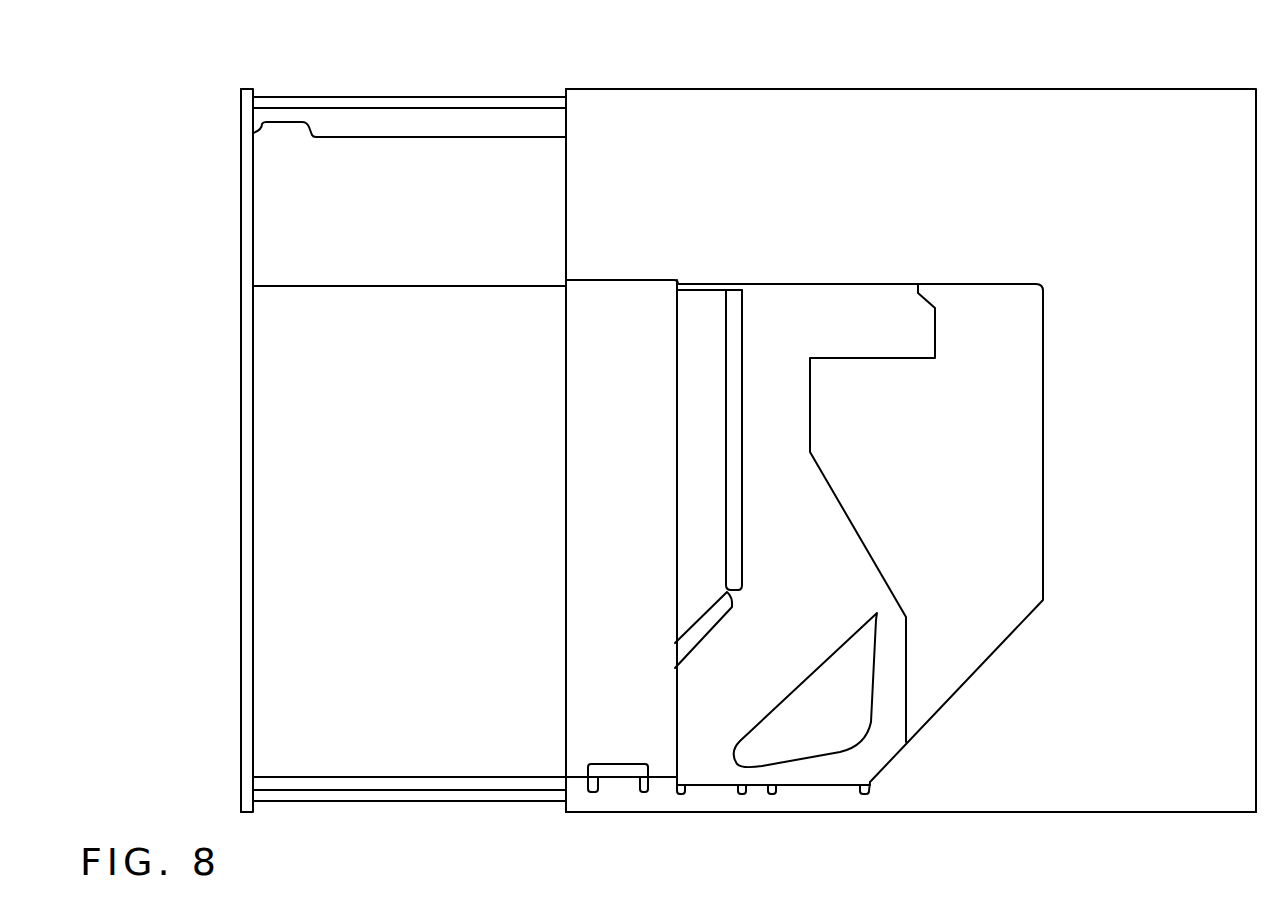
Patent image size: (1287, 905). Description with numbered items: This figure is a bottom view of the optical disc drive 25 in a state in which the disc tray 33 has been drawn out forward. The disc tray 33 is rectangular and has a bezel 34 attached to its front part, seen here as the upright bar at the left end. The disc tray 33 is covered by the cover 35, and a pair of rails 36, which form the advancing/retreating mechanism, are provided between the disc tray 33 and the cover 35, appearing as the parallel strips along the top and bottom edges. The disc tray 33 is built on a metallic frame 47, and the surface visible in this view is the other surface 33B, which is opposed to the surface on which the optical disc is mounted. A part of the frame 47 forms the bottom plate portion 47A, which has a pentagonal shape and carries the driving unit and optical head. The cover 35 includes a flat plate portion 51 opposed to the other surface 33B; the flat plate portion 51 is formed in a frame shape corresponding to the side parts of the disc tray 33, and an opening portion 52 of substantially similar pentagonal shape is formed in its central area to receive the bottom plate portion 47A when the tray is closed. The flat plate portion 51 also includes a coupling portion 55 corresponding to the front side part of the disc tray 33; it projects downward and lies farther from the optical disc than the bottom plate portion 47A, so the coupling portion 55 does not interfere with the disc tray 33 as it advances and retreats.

The optical disc drive 25 is at (779, 70).
The disc tray 33 is at (415, 155).
The other surface 33B is at (497, 155).
The bezel 34 is at (243, 385).
The cover 35 is at (1130, 115).
The rails 36 is at (331, 105).
The frame 47 is at (262, 222).
The bottom plate portion 47A is at (418, 310).
The flat plate portion 51 is at (1100, 793).
The opening portion 52 is at (976, 645).
The coupling portion 55 is at (580, 596).